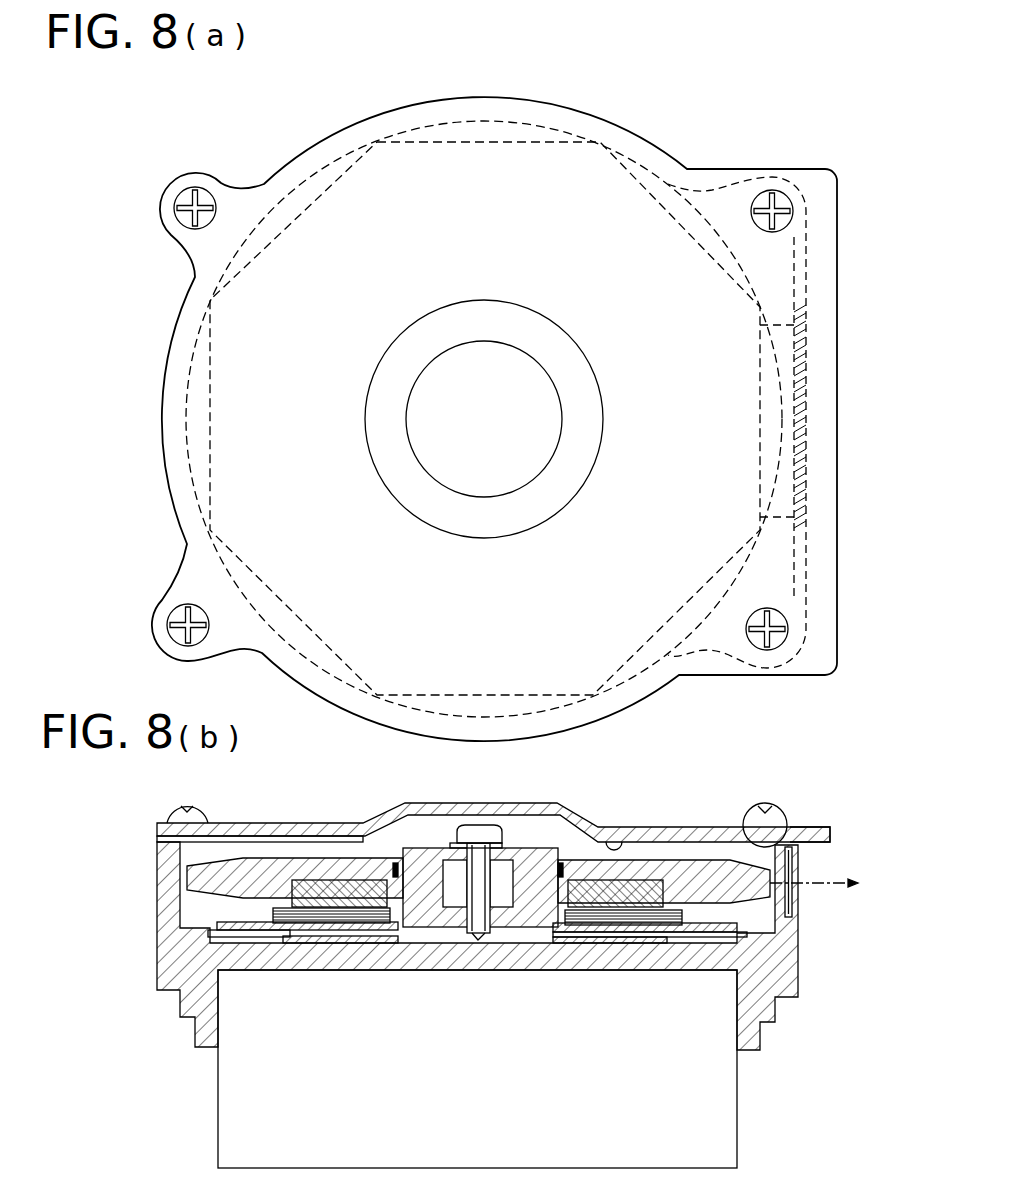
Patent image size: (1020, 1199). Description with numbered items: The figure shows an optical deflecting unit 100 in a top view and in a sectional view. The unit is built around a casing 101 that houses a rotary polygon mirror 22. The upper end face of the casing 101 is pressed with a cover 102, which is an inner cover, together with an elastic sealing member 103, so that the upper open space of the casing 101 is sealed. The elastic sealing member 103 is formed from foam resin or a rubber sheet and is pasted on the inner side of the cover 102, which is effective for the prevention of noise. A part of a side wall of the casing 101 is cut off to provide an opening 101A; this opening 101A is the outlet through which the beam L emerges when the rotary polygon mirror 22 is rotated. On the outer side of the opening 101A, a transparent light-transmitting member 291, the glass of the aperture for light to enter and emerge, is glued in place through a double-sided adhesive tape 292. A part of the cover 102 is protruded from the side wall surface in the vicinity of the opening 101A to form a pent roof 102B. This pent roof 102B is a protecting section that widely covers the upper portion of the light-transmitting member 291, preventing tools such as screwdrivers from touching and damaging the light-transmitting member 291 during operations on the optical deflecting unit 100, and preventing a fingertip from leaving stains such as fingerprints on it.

In FIG. 8b, the optical deflecting unit 100 is at (286, 808).
In FIG. 8b, the casing 101 is at (775, 1022).
In FIG. 8a, the opening 101A is at (782, 335).
In FIG. 8b, the opening 101A is at (776, 905).
In FIG. 8a, the cover 102 is at (623, 133).
In FIG. 8b, the cover 102 is at (657, 825).
In FIG. 8a, the pent roof 102B is at (817, 655).
In FIG. 8b, the pent roof 102B is at (810, 834).
In FIG. 8b, the elastic sealing member 103 is at (622, 833).
In FIG. 8a, the rotary polygon mirror 22 is at (630, 202).
In FIG. 8b, the rotary polygon mirror 22 is at (698, 860).
In FIG. 8a, the light-transmitting member 291 is at (807, 455).
In FIG. 8b, the light-transmitting member 291 is at (798, 915).
In FIG. 8a, the double-sided adhesive tape 292 is at (807, 363).
In FIG. 8b, the double-sided adhesive tape 292 is at (760, 806).
In FIG. 8b, the beam L is at (828, 887).